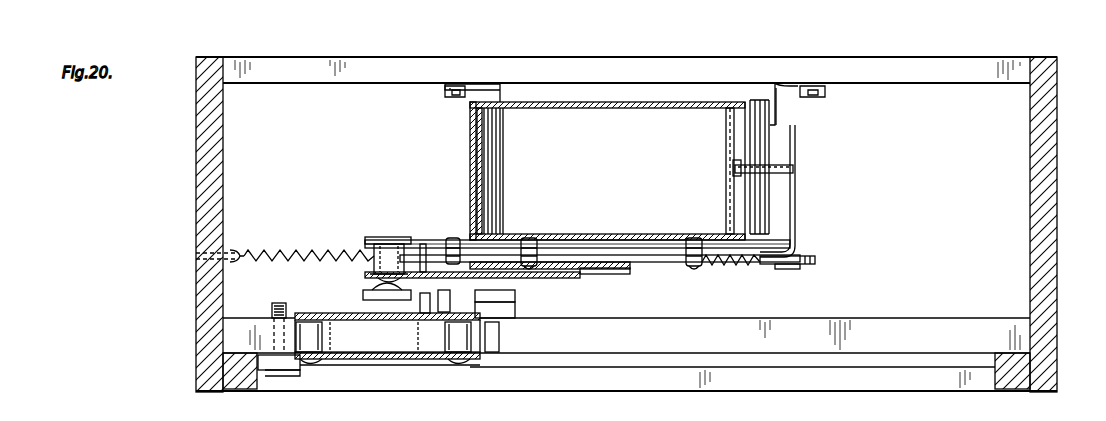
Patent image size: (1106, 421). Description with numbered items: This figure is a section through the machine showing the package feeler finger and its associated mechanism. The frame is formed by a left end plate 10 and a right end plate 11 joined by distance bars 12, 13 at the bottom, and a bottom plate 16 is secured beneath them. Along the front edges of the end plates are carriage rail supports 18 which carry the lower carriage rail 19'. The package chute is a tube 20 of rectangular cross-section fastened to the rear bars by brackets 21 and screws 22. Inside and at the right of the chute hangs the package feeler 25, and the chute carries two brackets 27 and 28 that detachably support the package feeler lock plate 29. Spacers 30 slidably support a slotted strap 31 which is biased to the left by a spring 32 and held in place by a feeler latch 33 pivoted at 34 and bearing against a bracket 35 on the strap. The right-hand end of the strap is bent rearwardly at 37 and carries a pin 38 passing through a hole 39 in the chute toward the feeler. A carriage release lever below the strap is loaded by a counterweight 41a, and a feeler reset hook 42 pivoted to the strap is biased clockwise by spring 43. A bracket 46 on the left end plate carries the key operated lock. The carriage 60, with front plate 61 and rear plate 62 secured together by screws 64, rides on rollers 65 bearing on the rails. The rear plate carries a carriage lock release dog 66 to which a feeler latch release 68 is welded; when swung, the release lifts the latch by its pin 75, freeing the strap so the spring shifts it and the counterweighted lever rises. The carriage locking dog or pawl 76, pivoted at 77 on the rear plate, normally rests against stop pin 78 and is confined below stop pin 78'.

The left end plate 10 is at (203, 290).
The right end plate 11 is at (1057, 255).
The distance piece or bar 12 is at (928, 70).
The distance piece or bar 13 is at (872, 383).
The bottom plate 16 is at (912, 248).
The carriage rail support 18 is at (243, 378).
The lower carriage rail 19' is at (626, 321).
The tube (package chute) 20 is at (606, 100).
The bracket 21 is at (490, 78).
The screw 22 is at (445, 96).
The package feeler 25 is at (726, 185).
The bracket 27 is at (475, 190).
The bracket 28 is at (770, 200).
The package feeler lock plate 29 is at (590, 246).
The spacer 30 is at (531, 238).
The slotted strap 31 is at (660, 265).
The spring 32 is at (300, 254).
The feeler latch 33 is at (606, 275).
The pivot 34 is at (392, 238).
The bracket 35 is at (574, 278).
The rearwardly bent end 37 is at (796, 222).
The pin 38 is at (770, 168).
The hole 39 is at (758, 150).
The counterweight 41a is at (430, 244).
The feeler reset hook 42 is at (800, 266).
The spring 43 is at (728, 266).
The bracket 46 is at (292, 372).
The carriage 60 is at (440, 368).
The front plate 61 is at (372, 360).
The rear plate 62 is at (365, 322).
The screw 64 is at (322, 365).
The roller 65 is at (296, 334).
The carriage lock release dog 66 is at (516, 307).
The feeler latch release 68 is at (516, 294).
The pin 75 is at (446, 312).
The carriage locking dog or pawl 76 is at (422, 306).
The pivot 77 is at (396, 306).
The stop pin 78 is at (371, 285).
The stop pin 78' is at (458, 337).